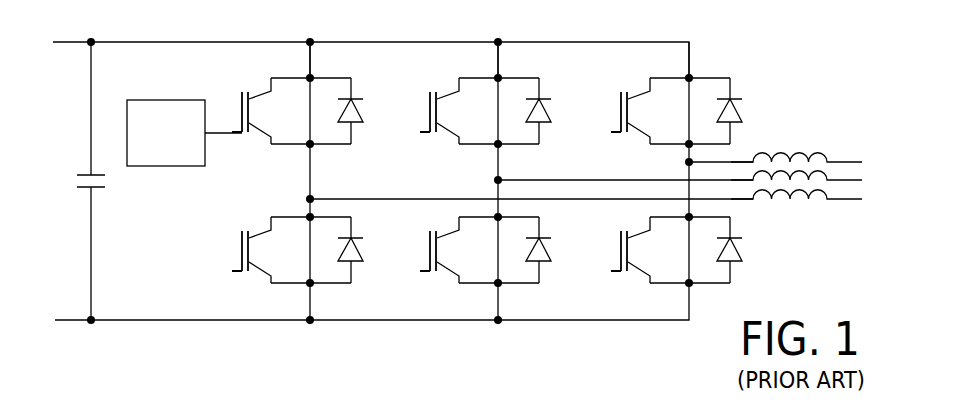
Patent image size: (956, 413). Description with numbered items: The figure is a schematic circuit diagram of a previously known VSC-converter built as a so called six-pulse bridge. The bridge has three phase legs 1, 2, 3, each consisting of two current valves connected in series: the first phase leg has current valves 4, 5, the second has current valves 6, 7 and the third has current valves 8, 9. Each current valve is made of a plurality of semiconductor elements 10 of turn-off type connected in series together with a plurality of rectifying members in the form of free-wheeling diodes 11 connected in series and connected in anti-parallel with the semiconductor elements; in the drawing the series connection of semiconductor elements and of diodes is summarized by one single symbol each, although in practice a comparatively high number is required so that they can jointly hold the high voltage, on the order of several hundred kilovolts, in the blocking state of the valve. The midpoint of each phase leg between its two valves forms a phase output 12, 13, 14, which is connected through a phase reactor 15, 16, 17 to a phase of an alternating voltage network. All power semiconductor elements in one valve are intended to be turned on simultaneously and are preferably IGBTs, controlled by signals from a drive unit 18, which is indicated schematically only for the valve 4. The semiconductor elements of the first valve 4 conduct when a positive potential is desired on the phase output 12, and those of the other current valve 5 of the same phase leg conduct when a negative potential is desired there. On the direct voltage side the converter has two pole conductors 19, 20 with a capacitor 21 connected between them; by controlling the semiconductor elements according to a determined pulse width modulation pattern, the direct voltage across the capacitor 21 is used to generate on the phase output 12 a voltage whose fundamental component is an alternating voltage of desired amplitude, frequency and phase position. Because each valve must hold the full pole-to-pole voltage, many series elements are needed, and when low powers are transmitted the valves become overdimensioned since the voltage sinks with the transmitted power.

The phase leg 1 is at (313, 62).
The phase leg 2 is at (501, 62).
The phase leg 3 is at (692, 60).
The current valve 4 is at (264, 132).
The current valve 5 is at (266, 271).
The current valve 6 is at (454, 132).
The current valve 7 is at (454, 271).
The current valve 8 is at (645, 132).
The current valve 9 is at (645, 271).
The semiconductor element 10 is at (240, 96).
The free-wheeling diode 11 is at (338, 110).
The phase output 12 is at (306, 199).
The phase output 13 is at (496, 180).
The phase output 14 is at (687, 162).
The phase reactor 15 is at (798, 200).
The phase reactor 16 is at (828, 174).
The phase reactor 17 is at (776, 154).
The drive unit 18 is at (156, 100).
The pole conductor 19 is at (56, 42).
The pole conductor 20 is at (60, 320).
The capacitor 21 is at (82, 176).